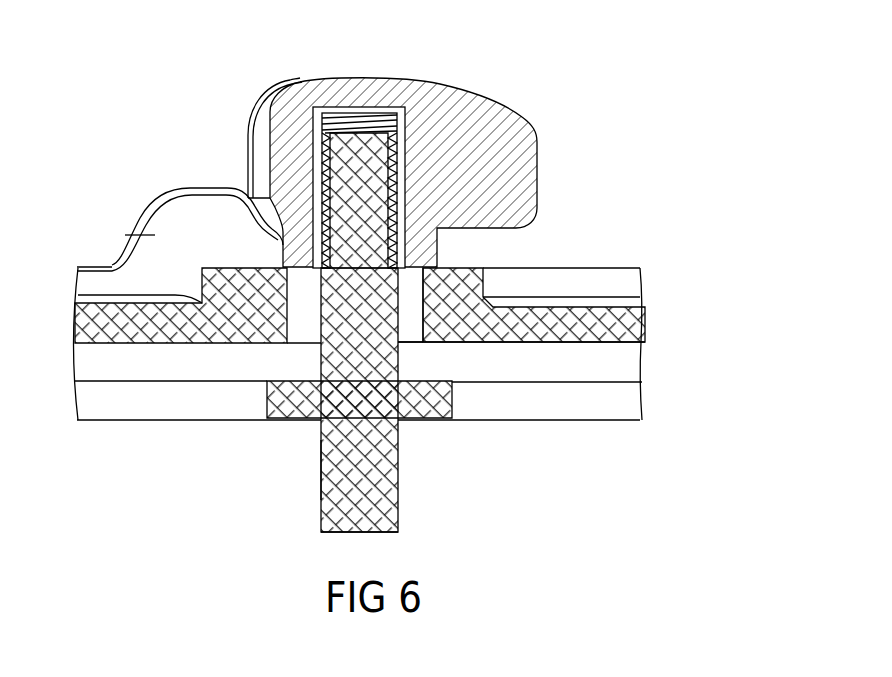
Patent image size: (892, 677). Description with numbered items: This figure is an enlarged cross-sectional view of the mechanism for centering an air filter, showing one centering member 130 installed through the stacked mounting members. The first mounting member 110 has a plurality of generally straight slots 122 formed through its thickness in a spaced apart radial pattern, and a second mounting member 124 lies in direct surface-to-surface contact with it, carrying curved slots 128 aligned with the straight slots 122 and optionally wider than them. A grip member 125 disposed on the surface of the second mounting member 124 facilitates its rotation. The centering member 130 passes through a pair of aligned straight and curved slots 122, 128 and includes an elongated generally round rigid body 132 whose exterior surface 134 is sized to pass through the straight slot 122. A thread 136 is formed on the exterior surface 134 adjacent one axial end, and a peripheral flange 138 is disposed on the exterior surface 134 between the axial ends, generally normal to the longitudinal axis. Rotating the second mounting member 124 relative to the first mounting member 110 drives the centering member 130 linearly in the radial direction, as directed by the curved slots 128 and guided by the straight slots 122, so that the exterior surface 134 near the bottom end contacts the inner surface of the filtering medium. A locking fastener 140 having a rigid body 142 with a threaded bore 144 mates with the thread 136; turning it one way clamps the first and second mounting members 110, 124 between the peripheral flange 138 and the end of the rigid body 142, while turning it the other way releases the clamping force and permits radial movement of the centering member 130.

The first mounting member 110 is at (396, 343).
The generally straight slots 122 is at (369, 360).
The second mounting member 124 is at (640, 303).
The grip member 125 is at (145, 217).
The curved slots 128 is at (412, 290).
The centering member 130 is at (369, 360).
The generally round rigid body 132 is at (332, 462).
The exterior surface 134 is at (318, 518).
The thread 136 is at (407, 177).
The peripheral flange 138 is at (307, 417).
The locking fastener 140 is at (390, 134).
The rigid body 142 is at (417, 88).
The threaded bore 144 is at (343, 142).